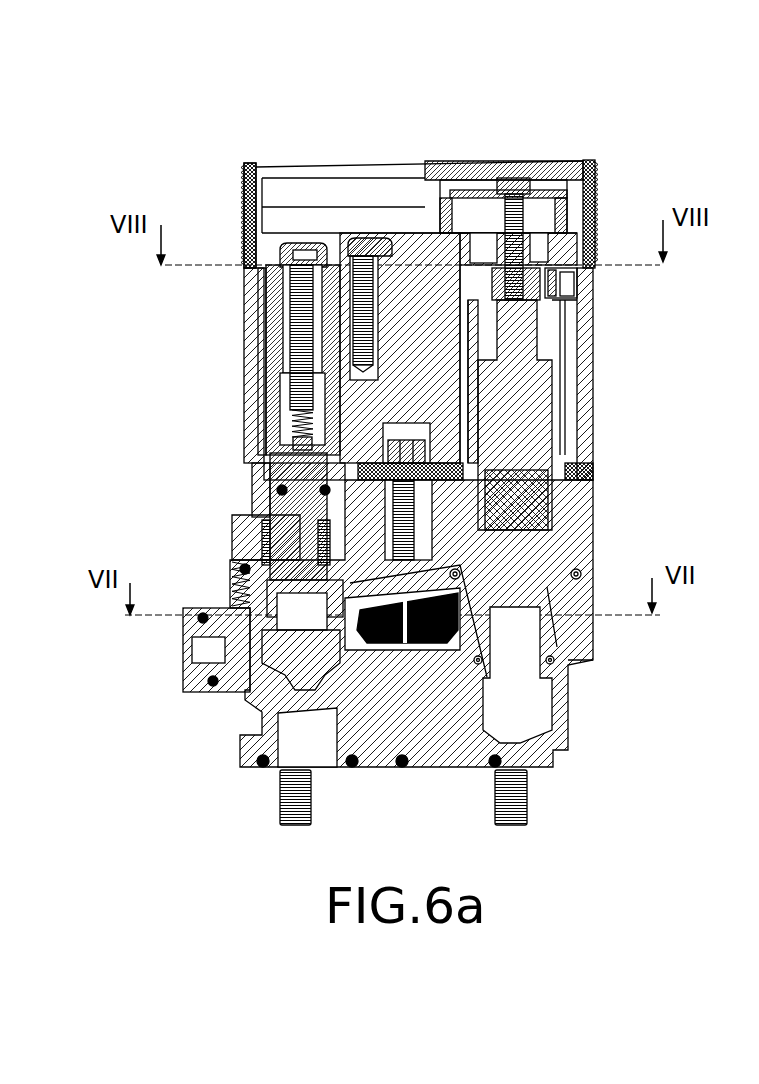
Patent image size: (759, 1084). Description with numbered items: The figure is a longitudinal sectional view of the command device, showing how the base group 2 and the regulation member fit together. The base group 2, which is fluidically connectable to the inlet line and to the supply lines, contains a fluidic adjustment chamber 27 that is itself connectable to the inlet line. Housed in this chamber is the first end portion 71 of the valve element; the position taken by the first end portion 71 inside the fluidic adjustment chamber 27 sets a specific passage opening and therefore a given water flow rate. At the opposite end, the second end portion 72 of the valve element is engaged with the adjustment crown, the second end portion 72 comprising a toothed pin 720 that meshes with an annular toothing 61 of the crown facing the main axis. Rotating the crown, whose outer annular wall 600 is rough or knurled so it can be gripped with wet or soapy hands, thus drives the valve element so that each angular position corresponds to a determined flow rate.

The base group 2 is at (594, 702).
The outer annular wall 600 is at (596, 224).
The toothed pin 720 is at (248, 205).
The second end portion 72 is at (262, 316).
The annular toothing 61 is at (566, 283).
The first end portion 71 is at (292, 507).
The fluidic adjustment chamber 27 is at (230, 557).